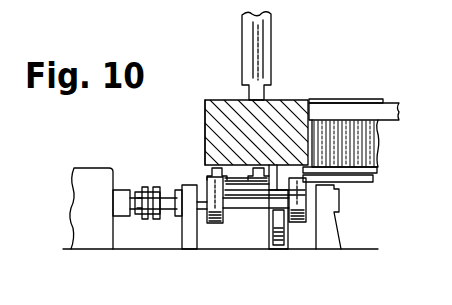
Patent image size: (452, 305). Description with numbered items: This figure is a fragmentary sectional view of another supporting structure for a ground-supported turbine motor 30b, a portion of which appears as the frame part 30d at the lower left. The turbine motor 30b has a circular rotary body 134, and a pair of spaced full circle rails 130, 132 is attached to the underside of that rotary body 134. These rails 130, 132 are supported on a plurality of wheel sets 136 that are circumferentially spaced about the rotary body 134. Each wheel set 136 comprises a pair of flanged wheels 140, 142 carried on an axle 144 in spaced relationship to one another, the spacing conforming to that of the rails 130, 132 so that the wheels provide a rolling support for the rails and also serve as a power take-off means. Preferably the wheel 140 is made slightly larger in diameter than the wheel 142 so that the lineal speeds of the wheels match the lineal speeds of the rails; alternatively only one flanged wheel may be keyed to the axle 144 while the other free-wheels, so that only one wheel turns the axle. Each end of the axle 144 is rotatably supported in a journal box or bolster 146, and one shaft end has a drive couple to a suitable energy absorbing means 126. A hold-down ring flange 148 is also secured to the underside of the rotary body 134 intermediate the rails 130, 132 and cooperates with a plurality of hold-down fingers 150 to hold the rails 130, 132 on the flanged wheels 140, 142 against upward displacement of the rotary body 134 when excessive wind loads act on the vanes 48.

The ground-supported turbine motor 30b is at (213, 92).
The frame portion 30d is at (45, 297).
The vanes 48 is at (266, 47).
The energy absorbing means 126 is at (85, 175).
The full circle rail 130 is at (213, 176).
The full circle rail 132 is at (333, 167).
The circular rotary body 134 is at (205, 115).
The wheel set 136 is at (207, 220).
The flanged wheel 140 is at (225, 212).
The flanged wheel 142 is at (292, 210).
The axle 144 is at (248, 209).
The journal box or bolster 146 is at (184, 245).
The hold-down ring flange 148 is at (220, 140).
The hold-down fingers 150 is at (272, 165).